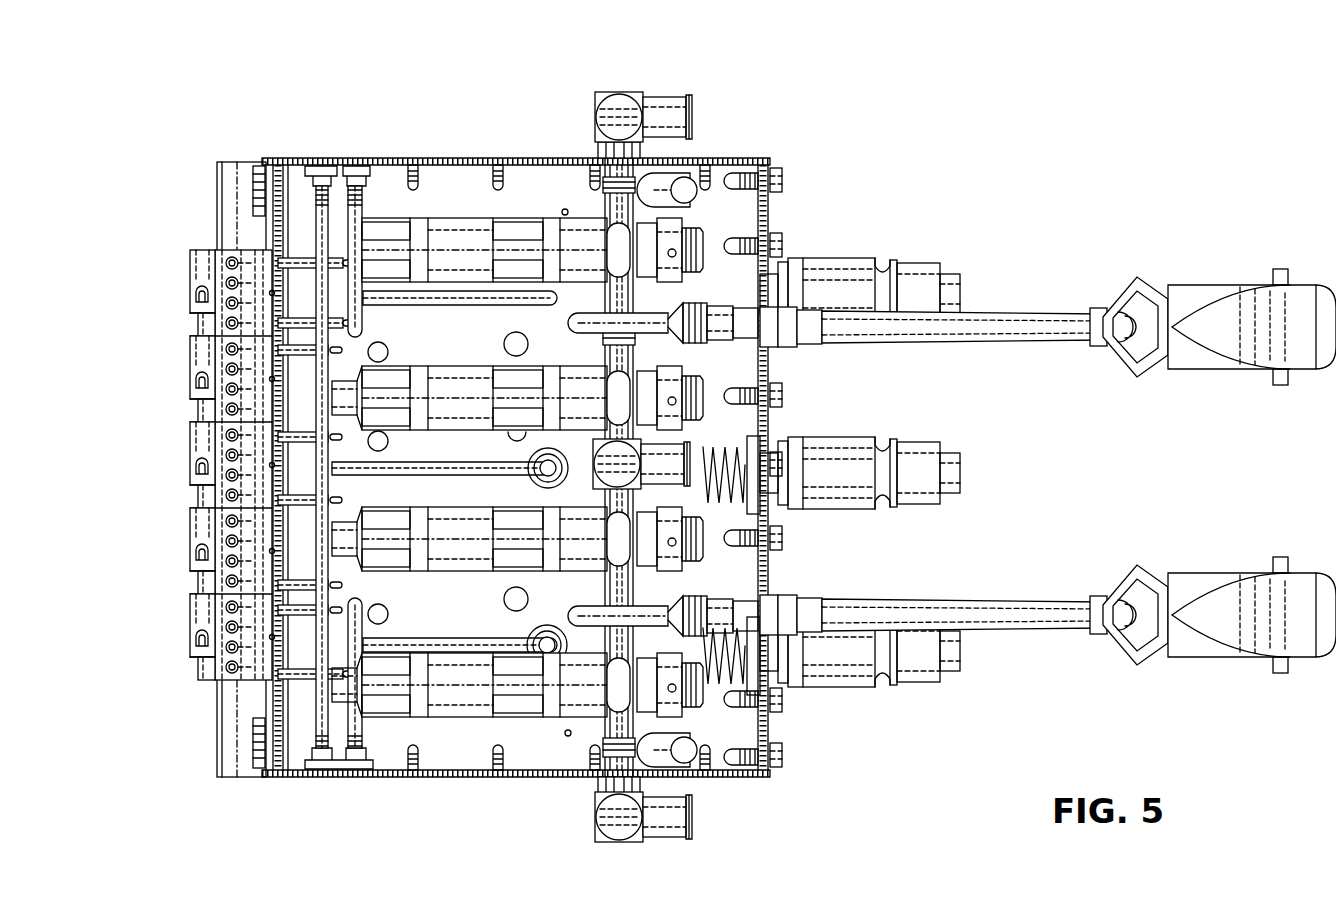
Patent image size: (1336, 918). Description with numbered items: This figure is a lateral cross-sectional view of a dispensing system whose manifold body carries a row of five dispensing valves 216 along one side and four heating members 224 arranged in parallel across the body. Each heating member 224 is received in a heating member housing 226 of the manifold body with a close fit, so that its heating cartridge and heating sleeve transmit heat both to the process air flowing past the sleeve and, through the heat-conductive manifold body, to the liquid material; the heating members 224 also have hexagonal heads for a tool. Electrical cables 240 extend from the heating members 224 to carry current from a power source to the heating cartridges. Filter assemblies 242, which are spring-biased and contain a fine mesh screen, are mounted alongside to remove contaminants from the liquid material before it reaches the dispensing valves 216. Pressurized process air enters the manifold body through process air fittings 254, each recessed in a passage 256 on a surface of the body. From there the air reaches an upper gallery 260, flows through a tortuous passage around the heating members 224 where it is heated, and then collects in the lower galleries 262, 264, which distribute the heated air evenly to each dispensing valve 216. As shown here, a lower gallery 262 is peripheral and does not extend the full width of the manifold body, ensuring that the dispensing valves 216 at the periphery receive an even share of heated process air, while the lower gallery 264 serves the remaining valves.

The dispensing valve 216 is at (190, 270).
The heating member 224 is at (445, 240).
The heating member housing 226 is at (522, 216).
The electrical cable 240 is at (1025, 310).
The filter assembly 242 is at (845, 258).
The process air fitting 254 is at (618, 92).
The passage 256 is at (640, 160).
The upper gallery 260 is at (570, 312).
The lower gallery 262 is at (364, 232).
The lower gallery 264 is at (325, 228).